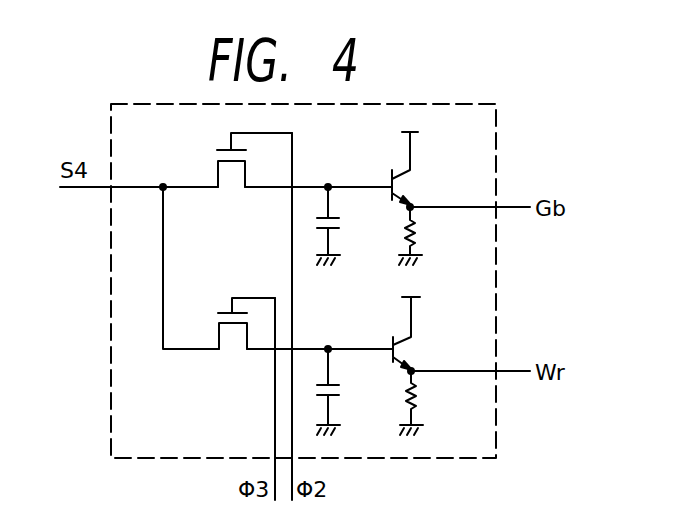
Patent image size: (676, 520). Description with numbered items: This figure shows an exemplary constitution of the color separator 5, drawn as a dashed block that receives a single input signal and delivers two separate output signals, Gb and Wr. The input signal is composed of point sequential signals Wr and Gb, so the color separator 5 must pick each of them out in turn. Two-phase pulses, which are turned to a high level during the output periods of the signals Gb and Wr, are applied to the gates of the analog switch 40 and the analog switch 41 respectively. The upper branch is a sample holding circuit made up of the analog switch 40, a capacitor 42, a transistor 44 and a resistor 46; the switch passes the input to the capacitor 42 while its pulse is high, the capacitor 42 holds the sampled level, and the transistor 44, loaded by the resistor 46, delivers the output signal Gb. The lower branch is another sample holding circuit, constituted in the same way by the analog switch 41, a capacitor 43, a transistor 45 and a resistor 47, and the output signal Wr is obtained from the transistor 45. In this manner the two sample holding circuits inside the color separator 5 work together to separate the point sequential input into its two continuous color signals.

The color separator 5 is at (498, 137).
The analog switch 40 is at (233, 177).
The analog switch 41 is at (233, 339).
The capacitor 42 is at (345, 224).
The capacitor 43 is at (345, 391).
The transistor 44 is at (407, 188).
The transistor 45 is at (406, 352).
The resistor 46 is at (418, 229).
The resistor 47 is at (419, 392).